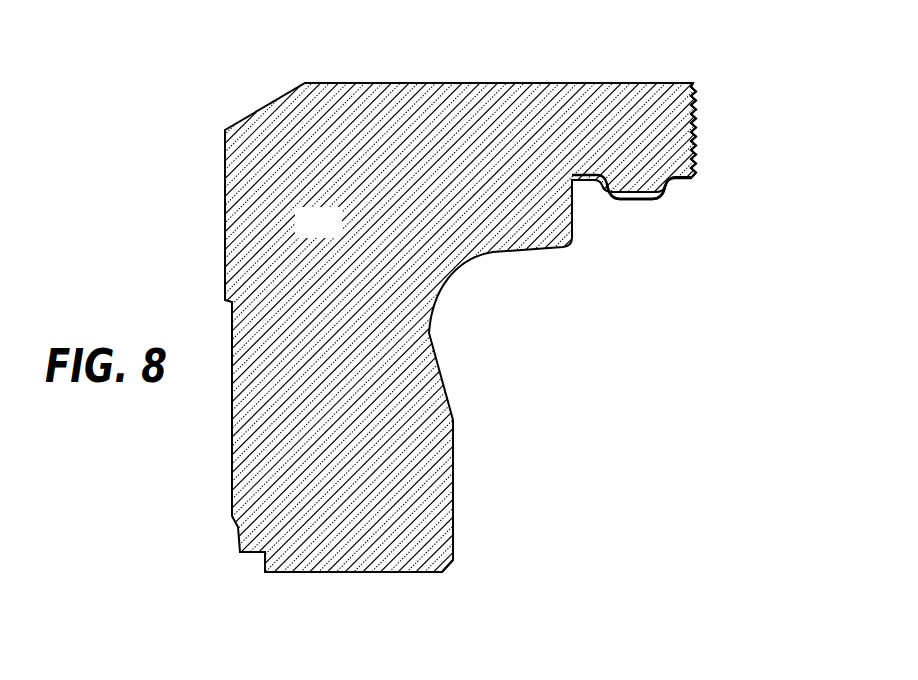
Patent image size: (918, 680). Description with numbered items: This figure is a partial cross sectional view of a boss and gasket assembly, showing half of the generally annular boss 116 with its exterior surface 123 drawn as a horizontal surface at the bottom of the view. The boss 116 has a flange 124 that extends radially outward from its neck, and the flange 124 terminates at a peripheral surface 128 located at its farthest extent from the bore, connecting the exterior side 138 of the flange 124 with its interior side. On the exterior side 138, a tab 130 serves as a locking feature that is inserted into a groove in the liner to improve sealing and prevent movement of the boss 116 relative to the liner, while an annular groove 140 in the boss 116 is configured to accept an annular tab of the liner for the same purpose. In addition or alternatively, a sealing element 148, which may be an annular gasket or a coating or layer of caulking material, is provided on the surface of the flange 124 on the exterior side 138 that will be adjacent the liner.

The boss 116 is at (301, 233).
The exterior surface 123 is at (352, 572).
The flange 124 is at (652, 126).
The peripheral surface 128 is at (708, 113).
The tab 130 is at (670, 181).
The exterior side 138 is at (681, 216).
The annular groove 140 is at (593, 177).
The sealing element 148 is at (645, 203).